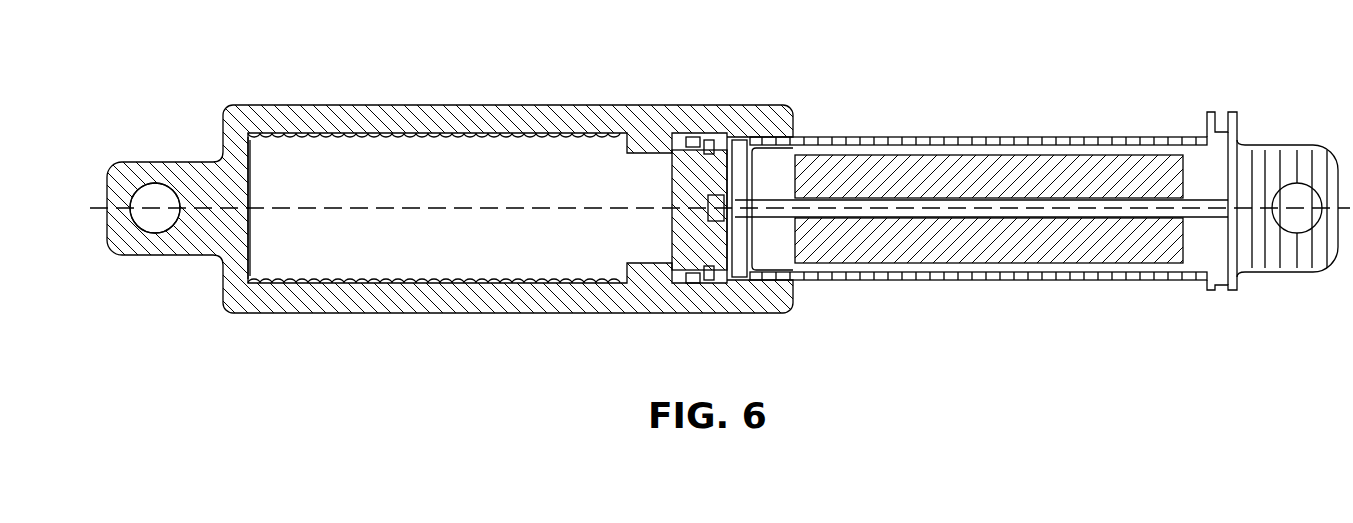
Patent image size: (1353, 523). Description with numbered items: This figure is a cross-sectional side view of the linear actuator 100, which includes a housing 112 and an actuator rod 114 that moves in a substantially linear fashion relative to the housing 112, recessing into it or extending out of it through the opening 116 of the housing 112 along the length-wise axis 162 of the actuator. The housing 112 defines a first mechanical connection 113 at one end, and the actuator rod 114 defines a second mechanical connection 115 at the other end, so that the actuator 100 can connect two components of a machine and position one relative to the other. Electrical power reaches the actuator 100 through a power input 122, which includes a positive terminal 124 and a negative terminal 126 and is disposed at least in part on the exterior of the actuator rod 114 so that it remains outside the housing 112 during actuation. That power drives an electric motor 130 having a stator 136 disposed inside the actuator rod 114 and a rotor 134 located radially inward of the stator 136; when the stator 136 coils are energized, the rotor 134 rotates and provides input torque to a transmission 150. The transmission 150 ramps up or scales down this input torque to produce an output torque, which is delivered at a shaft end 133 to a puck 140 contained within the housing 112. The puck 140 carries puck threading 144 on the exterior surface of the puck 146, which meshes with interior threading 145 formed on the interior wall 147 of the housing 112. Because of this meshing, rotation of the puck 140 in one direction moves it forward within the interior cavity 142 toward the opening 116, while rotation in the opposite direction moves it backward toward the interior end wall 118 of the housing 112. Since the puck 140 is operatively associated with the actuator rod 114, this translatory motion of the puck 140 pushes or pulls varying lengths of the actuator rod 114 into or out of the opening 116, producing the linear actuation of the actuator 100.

The linear actuator 100 is at (762, 52).
The housing 112 is at (490, 103).
The first mechanical connection 113 is at (143, 200).
The actuator rod 114 is at (978, 136).
The second mechanical connection 115 is at (1300, 227).
The opening 116 is at (800, 130).
The interior end wall 118 is at (250, 223).
The power input 122 is at (1150, 122).
The positive terminal 124 is at (1237, 123).
The negative terminal 126 is at (1208, 133).
The electric motor 130 is at (1100, 285).
The shaft end 133 is at (730, 133).
The rotor 134 is at (784, 207).
The stator 136 is at (897, 178).
The puck 140 is at (666, 218).
The interior cavity 142 is at (318, 198).
The puck threading 144 is at (662, 133).
The interior threading 145 is at (548, 135).
The exterior surface of the puck 146 is at (709, 210).
The interior wall 147 is at (434, 281).
The transmission 150 is at (700, 183).
The length-wise axis 162 is at (363, 212).